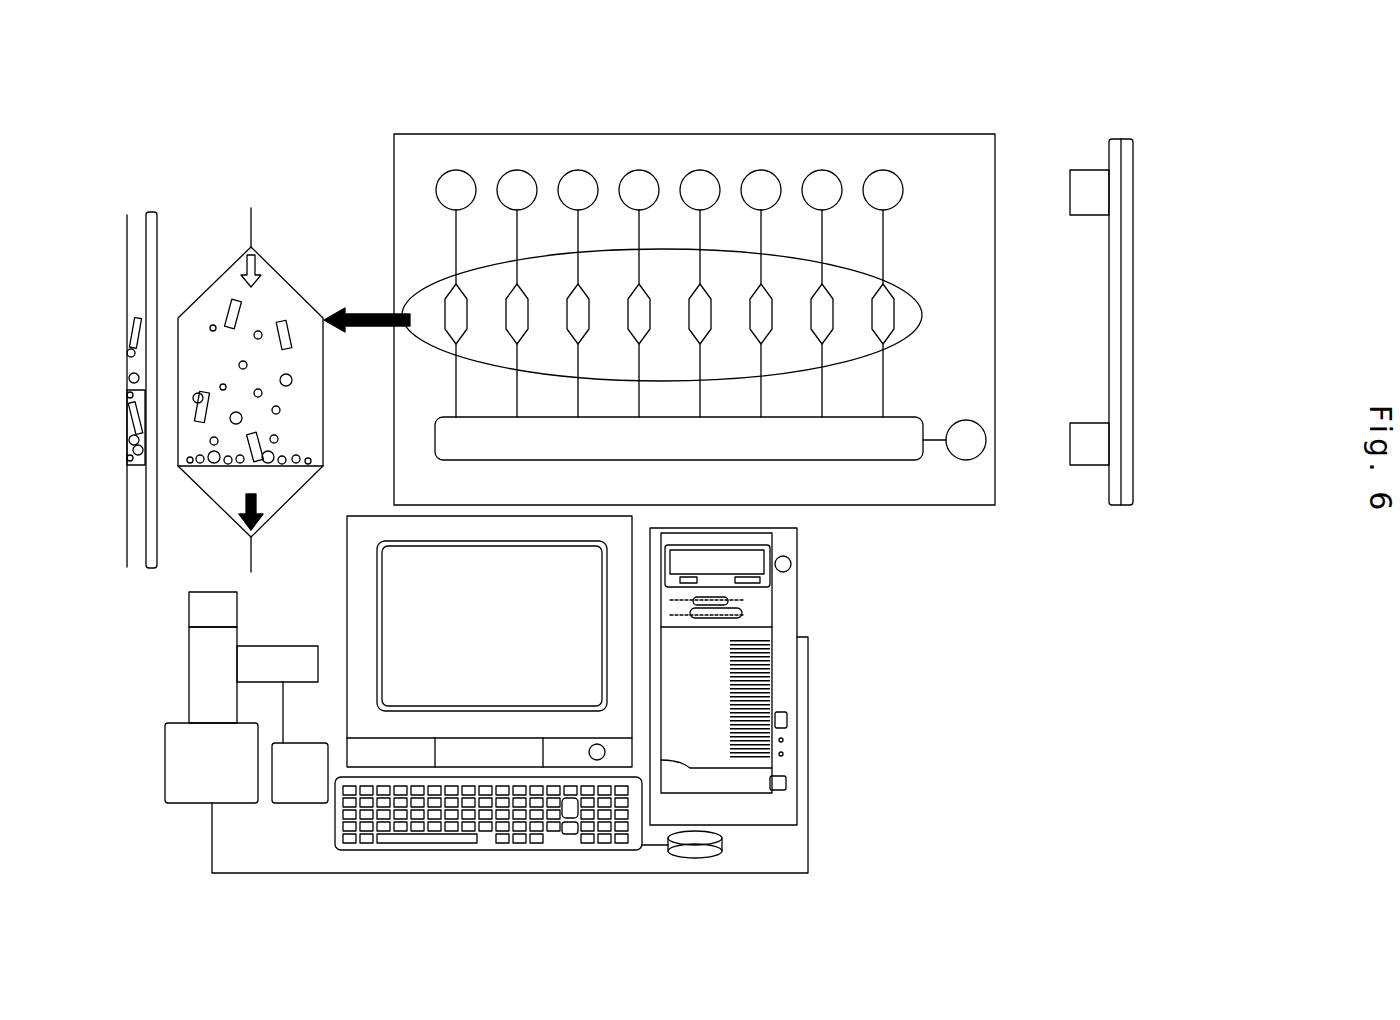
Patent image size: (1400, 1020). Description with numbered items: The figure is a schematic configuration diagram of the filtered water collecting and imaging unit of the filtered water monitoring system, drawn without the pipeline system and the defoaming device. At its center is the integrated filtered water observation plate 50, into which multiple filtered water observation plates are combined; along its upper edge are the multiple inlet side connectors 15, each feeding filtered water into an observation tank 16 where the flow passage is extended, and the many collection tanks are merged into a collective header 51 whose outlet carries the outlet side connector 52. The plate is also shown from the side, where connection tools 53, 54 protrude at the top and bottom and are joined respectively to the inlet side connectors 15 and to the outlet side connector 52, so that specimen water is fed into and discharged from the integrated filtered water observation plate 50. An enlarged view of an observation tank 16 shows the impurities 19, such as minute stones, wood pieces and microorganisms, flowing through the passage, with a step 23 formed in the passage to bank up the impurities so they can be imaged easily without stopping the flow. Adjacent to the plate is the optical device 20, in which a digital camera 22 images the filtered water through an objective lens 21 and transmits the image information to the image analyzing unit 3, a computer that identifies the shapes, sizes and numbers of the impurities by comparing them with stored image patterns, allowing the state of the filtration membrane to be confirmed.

The image analyzing unit 3 is at (332, 587).
The inlet side connector 15 is at (445, 178).
The observation tank 16 is at (128, 352).
The impurities 19 is at (262, 330).
The optical device 20 is at (198, 697).
The objective lens 21 is at (187, 600).
The digital camera 22 is at (163, 764).
The step 23 is at (293, 452).
The integrated filtered water observation plate 50 is at (690, 128).
The collective header 51 is at (678, 462).
The outlet side connector 52 is at (965, 420).
The connection tools 53 is at (1078, 168).
The connection tool 54 is at (1078, 421).